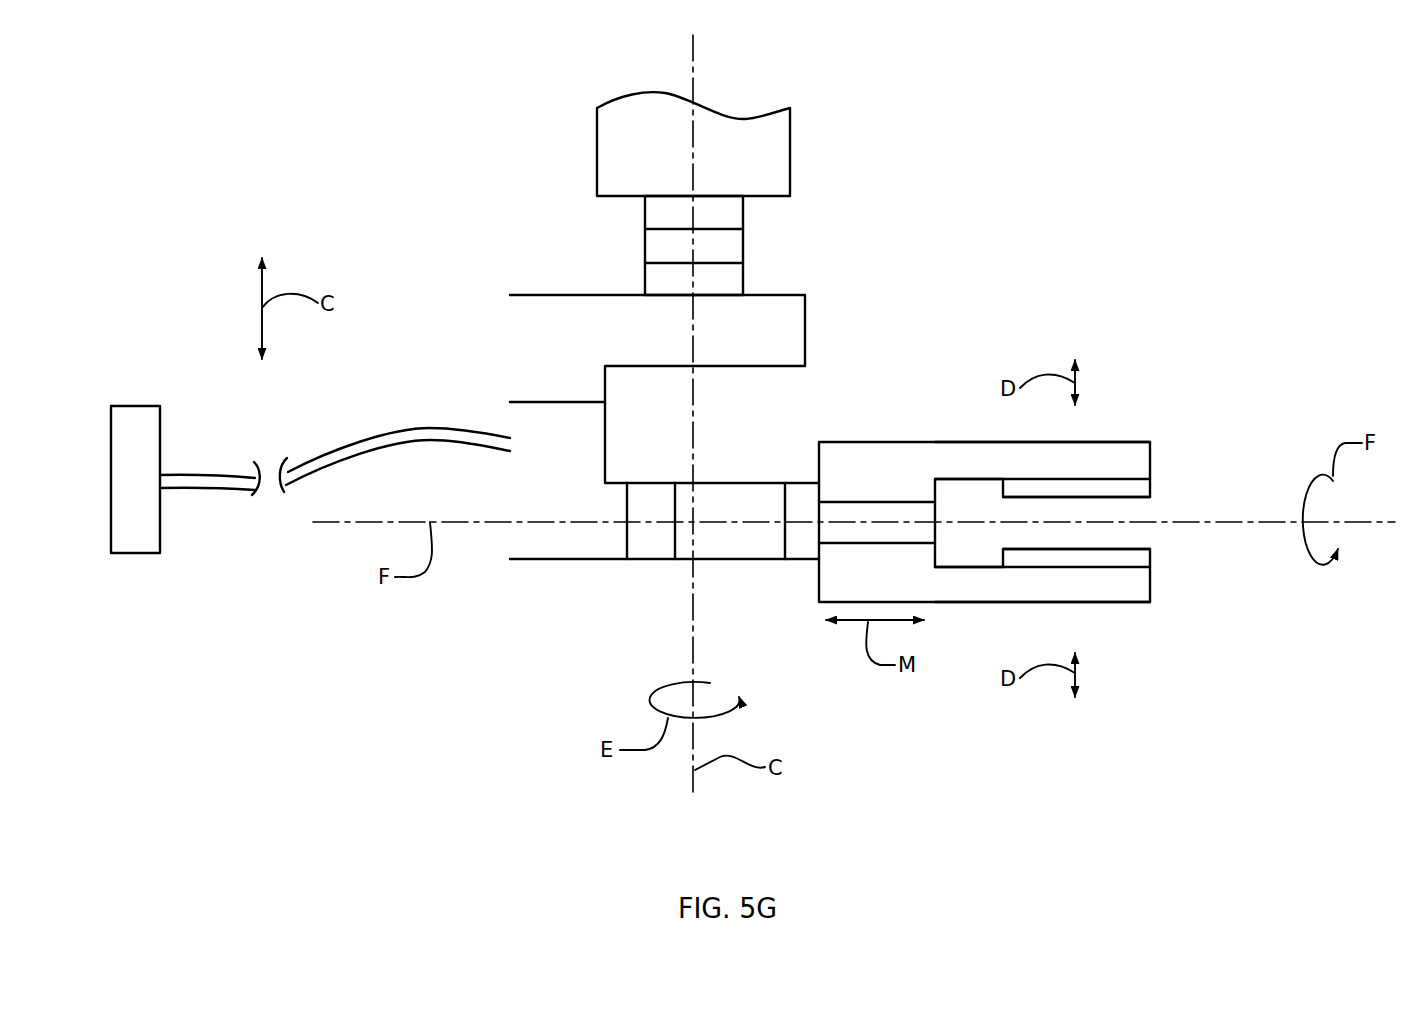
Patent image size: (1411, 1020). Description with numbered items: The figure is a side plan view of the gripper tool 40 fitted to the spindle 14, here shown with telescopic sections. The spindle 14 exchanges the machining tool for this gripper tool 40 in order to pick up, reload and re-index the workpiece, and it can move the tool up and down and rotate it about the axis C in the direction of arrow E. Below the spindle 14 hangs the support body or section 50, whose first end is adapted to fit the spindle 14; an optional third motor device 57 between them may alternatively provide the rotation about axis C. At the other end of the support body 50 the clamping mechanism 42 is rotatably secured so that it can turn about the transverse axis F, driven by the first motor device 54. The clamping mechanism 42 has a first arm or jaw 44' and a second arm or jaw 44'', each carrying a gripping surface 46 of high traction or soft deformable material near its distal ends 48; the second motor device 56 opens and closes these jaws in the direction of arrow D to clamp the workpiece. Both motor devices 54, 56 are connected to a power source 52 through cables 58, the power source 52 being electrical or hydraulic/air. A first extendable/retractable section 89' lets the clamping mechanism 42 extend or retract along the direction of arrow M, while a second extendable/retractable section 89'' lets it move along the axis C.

The spindle 14 is at (790, 150).
The gripper tool 40 is at (919, 247).
The clamping mechanism 42 is at (1108, 295).
The first arm or jaw 44' is at (1064, 416).
The second arm or jaw 44'' is at (1066, 629).
The gripping surface 46 is at (1150, 483).
The distal ends 48 is at (1163, 457).
The support body or section 50 is at (484, 393).
The power source 52 is at (130, 553).
The first motor device 54 is at (655, 559).
The second motor device 56 is at (795, 483).
The third motor device 57 is at (743, 243).
The cables 58 is at (360, 452).
The first extendable/retractable section 89' is at (776, 617).
The second extendable/retractable section 89'' is at (824, 277).